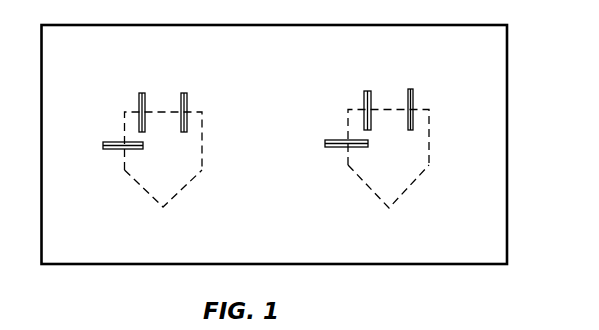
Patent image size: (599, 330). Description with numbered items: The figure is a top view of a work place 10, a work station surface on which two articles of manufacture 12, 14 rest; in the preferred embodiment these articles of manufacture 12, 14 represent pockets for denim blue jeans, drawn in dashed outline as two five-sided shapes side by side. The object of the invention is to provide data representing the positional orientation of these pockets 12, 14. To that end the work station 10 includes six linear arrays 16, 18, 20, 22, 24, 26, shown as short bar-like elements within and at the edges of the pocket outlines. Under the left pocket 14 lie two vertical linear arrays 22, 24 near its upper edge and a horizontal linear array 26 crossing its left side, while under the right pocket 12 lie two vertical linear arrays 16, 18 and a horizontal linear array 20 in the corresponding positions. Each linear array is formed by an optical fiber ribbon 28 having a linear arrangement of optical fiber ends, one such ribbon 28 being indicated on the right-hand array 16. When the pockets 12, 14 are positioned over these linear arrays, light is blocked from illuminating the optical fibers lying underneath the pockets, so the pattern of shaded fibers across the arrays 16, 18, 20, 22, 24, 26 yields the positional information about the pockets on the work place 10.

The work place 10 is at (507, 69).
The article of manufacture 12 is at (420, 174).
The article of manufacture 14 is at (191, 176).
The linear array 16 is at (434, 92).
The linear array 18 is at (371, 96).
The linear array 20 is at (330, 140).
The linear array 22 is at (188, 103).
The linear array 24 is at (145, 102).
The linear array 26 is at (108, 141).
The optical fiber ribbon 28 is at (410, 88).